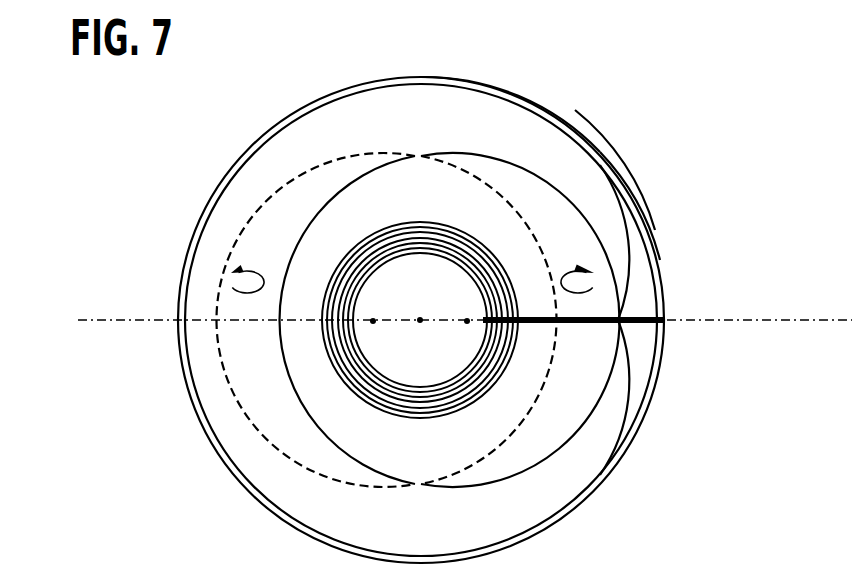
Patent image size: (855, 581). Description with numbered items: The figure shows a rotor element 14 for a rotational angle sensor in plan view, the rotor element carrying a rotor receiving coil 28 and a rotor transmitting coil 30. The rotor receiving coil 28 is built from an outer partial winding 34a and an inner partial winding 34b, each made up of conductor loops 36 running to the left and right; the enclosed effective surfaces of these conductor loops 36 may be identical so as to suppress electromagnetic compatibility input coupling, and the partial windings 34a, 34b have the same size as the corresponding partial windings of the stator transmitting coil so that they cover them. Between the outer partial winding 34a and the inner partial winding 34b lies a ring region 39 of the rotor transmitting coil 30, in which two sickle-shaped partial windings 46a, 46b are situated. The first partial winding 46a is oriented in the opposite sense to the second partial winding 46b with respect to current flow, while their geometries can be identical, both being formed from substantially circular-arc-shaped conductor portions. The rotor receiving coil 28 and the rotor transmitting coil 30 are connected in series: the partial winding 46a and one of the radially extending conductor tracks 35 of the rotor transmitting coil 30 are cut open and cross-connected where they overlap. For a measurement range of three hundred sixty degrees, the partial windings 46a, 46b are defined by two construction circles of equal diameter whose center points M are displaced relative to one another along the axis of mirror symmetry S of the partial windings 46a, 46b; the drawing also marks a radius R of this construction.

The rotor element 14 is at (586, 122).
The outer partial winding 34a is at (523, 94).
The inner partial winding 34b is at (399, 222).
The conductor loops 36 is at (603, 153).
The rotor receiving coil 28 is at (640, 194).
The rotor transmitting coil 30 is at (622, 261).
The ring region 39 is at (636, 290).
The radially extending conductor track 35 is at (634, 334).
The first partial winding 46a is at (592, 398).
The second partial winding 46b is at (252, 398).
The axis of mirror symmetry S is at (98, 319).
The radius R is at (420, 320).
The center points M is at (467, 320).